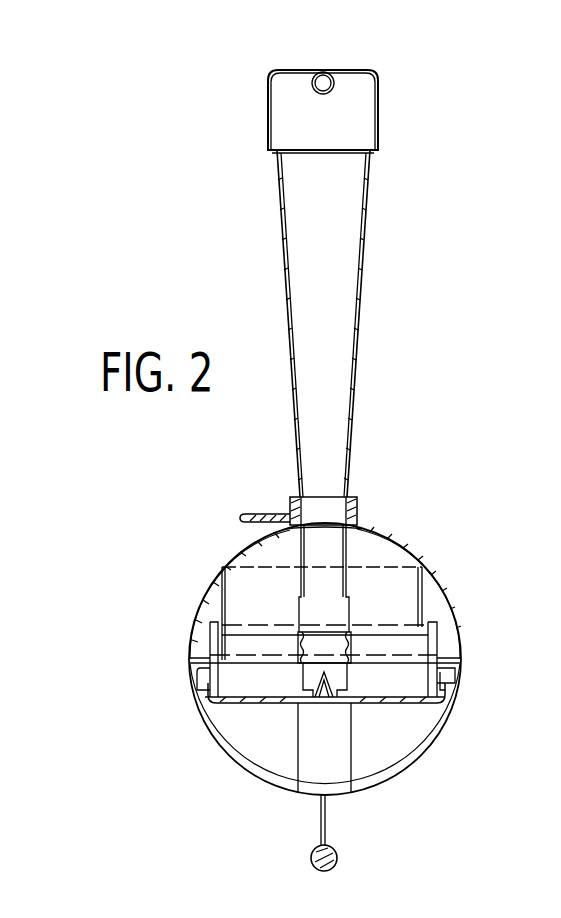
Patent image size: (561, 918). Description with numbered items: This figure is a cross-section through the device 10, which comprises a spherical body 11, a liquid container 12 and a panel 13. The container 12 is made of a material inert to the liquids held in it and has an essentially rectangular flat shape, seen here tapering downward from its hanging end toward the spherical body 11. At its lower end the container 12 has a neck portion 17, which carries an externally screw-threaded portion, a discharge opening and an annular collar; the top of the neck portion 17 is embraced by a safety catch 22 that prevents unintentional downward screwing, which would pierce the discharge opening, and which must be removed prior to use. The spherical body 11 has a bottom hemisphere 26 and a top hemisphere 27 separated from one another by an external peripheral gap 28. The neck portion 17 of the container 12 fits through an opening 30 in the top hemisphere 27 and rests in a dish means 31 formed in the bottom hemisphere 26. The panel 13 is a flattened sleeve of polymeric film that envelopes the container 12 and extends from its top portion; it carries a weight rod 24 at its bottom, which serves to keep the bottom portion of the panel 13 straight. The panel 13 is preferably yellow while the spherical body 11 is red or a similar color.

The device 10 is at (400, 428).
The spherical body 11 is at (457, 615).
The liquid container 12 is at (300, 247).
The panel 13 is at (329, 826).
The neck portion 17 is at (312, 606).
The safety catch 22 is at (254, 514).
The weight rod 24 is at (309, 857).
The bottom hemisphere 26 is at (233, 765).
The top hemisphere 27 is at (407, 550).
The external peripheral gap 28 is at (450, 678).
The opening 30 is at (385, 534).
The dish means 31 is at (447, 689).